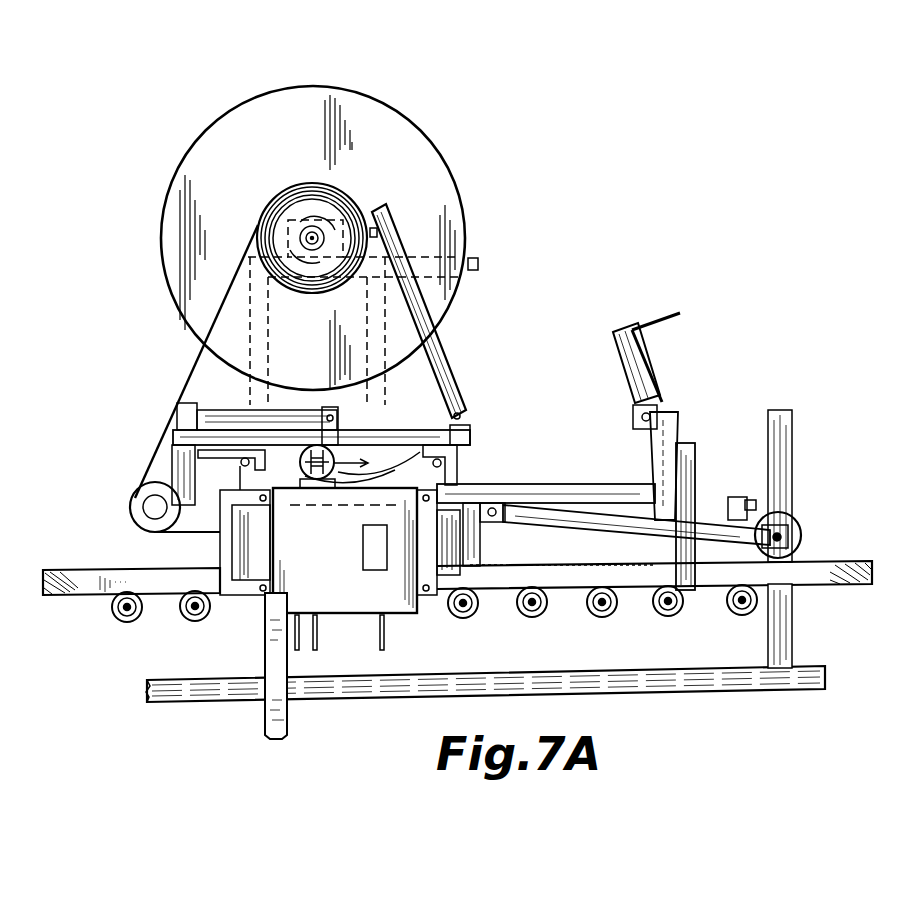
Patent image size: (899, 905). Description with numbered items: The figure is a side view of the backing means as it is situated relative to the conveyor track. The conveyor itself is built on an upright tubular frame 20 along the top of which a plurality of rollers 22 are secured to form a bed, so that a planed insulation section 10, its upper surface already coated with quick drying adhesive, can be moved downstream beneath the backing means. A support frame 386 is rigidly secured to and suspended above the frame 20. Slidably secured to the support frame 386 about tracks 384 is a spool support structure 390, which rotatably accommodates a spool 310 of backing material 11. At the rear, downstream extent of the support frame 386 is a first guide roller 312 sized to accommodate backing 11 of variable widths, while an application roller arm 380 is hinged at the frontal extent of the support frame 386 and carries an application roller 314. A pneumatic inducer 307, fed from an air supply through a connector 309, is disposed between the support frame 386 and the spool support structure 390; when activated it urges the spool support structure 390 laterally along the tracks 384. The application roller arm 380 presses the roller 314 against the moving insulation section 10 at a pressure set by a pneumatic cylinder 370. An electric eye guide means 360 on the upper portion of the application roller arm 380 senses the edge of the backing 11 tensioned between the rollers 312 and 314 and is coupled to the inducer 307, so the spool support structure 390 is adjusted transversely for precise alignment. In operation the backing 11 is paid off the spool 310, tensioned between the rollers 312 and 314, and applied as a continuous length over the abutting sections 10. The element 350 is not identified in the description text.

The insulation section 10 is at (871, 584).
The backing material 11 is at (190, 375).
The tubular frame 20 is at (623, 690).
The rollers 22 is at (599, 616).
The pneumatic inducer 307 is at (395, 470).
The connector 309 is at (400, 445).
The spool 310 is at (403, 115).
The first guide roller 312 is at (131, 508).
The application roller 314 is at (802, 530).
The control box 350 is at (400, 613).
The electric eye guide means 360 is at (743, 495).
The pneumatic cylinder 370 is at (648, 362).
The application roller arm 380 is at (703, 503).
The tracks 384 is at (243, 456).
The support frame 386 is at (477, 488).
The spool support structure 390 is at (400, 426).